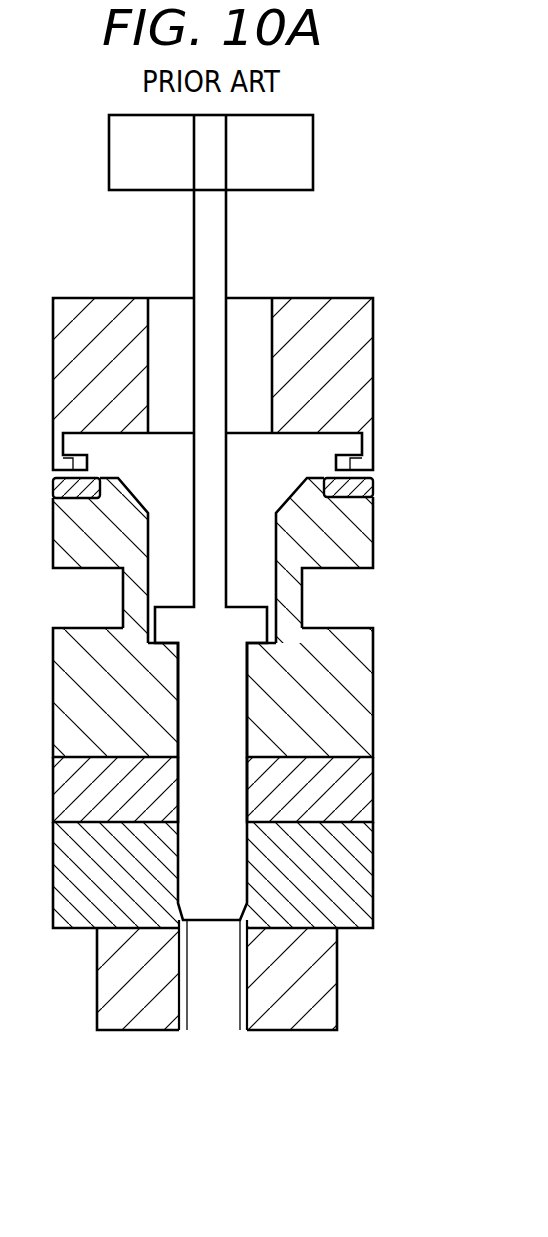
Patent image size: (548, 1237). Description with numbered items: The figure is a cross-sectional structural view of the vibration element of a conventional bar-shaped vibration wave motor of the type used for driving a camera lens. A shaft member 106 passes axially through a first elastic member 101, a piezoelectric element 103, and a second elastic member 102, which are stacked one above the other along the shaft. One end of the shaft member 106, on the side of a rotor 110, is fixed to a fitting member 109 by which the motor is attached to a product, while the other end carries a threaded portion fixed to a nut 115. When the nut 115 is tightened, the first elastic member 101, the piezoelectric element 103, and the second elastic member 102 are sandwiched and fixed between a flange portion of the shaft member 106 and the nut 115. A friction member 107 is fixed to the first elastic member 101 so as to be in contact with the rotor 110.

The fitting member 109 is at (297, 152).
The rotor 110 is at (360, 358).
The friction member 107 is at (364, 489).
The first elastic member 101 is at (362, 690).
The piezoelectric element 103 is at (362, 797).
The second elastic member 102 is at (360, 870).
The nut 115 is at (323, 978).
The shaft member 106 is at (217, 1020).